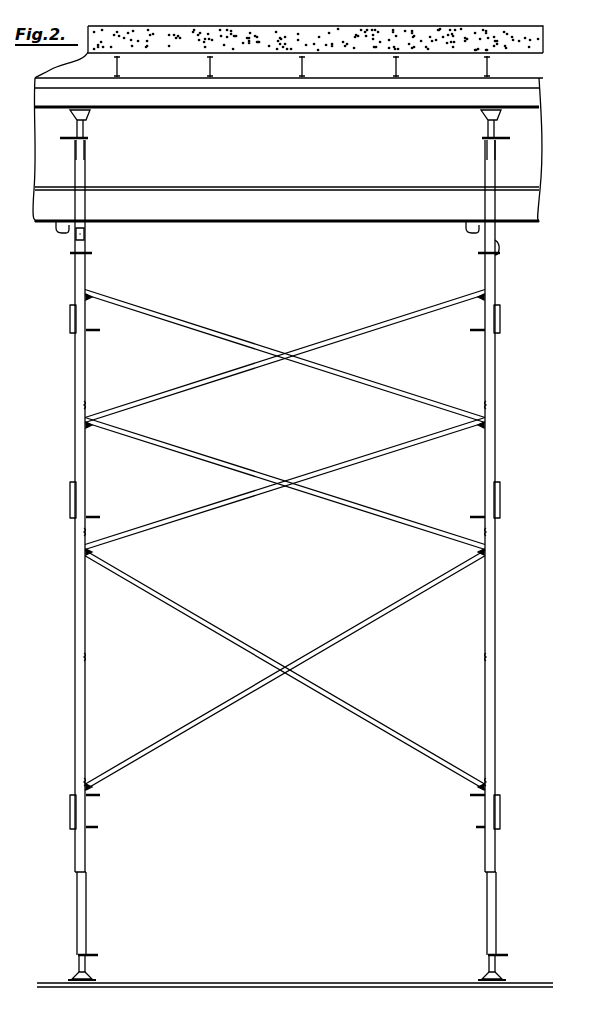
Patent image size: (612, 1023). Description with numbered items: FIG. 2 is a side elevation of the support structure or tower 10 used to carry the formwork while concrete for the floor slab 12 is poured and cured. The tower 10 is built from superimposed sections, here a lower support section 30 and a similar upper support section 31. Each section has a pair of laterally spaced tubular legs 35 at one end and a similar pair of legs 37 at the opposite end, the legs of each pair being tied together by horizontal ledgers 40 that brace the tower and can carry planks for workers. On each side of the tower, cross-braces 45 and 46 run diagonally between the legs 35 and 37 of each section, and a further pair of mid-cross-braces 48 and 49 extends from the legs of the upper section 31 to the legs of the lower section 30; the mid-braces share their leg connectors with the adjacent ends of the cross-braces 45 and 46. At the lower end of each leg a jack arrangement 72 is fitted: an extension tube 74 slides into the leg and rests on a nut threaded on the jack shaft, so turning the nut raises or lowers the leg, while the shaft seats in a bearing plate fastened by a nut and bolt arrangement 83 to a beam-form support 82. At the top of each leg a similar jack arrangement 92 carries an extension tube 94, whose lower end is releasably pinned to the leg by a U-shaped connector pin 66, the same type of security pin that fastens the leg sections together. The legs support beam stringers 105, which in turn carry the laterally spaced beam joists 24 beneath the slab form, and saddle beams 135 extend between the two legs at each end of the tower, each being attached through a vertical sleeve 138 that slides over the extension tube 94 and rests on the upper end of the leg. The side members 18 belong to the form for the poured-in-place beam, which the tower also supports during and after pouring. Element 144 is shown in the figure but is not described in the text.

The support structure or tower 10 is at (510, 425).
The floor slab 12 is at (354, 29).
The side members 18 is at (238, 168).
The beam joists 24 is at (306, 62).
The lower support section 30 is at (75, 622).
The upper support section 31 is at (72, 383).
The legs 35 is at (76, 692).
The legs 37 is at (496, 625).
The horizontal ledgers 40 is at (78, 780).
The cross-brace 45 is at (204, 307).
The cross-brace 46 is at (410, 308).
The mid-cross-brace 48 is at (215, 455).
The mid-cross-brace 49 is at (390, 447).
The U-shaped connector pin 66 is at (500, 310).
The jack arrangement 72 is at (72, 968).
The extension tube 74 is at (88, 899).
The support 82 is at (238, 983).
The nut and bolt arrangement 83 is at (92, 978).
The jack arrangement 92 is at (96, 128).
The extension tube 94 is at (86, 160).
The beam stringers 105 is at (245, 100).
The saddle beams 135 is at (62, 228).
The vertical sleeve 138 is at (86, 236).
The stringer 144 is at (342, 200).